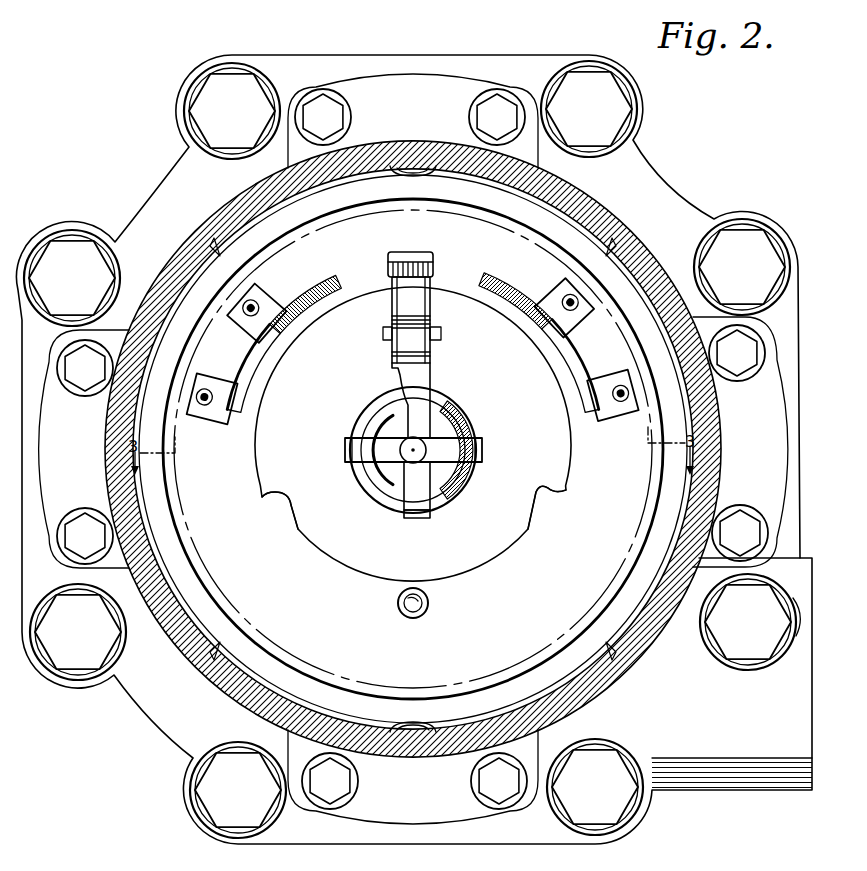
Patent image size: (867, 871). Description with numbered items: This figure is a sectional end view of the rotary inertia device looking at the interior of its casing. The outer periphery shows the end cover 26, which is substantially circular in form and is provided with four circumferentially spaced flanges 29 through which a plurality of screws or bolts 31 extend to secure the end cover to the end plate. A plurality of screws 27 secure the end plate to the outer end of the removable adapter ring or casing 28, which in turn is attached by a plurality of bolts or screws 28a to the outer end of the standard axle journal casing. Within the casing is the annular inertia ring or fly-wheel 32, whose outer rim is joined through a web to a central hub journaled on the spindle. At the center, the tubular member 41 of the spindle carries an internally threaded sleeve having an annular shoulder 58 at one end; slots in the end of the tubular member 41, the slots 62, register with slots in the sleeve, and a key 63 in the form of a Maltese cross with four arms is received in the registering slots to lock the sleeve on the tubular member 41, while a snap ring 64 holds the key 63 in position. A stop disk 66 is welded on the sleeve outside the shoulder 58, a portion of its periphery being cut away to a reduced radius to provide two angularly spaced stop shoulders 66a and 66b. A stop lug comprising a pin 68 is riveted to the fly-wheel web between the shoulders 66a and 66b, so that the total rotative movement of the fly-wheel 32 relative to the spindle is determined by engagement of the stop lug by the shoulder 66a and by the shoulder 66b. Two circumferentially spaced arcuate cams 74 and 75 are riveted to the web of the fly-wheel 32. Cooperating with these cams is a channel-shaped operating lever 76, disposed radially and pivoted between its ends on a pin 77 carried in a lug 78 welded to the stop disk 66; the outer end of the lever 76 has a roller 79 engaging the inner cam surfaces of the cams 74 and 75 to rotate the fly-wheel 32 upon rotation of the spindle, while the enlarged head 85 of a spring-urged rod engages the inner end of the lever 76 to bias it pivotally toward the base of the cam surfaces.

The end cover 26 is at (630, 652).
The screws 27 is at (407, 168).
The adapter ring or casing 28 is at (115, 215).
The bolts or screws 28a is at (225, 130).
The flanges 29 is at (398, 80).
The screws or bolts 31 is at (490, 118).
The inertia ring or fly-wheel 32 is at (500, 702).
The tubular member of spindle 41 is at (443, 433).
The annular shoulder 58 is at (387, 400).
The slots 62 is at (418, 503).
The key 63 is at (415, 487).
The snap ring 64 is at (472, 463).
The stop disk 66 is at (260, 472).
The stop shoulder 66a is at (274, 497).
The stop shoulder 66b is at (552, 493).
The pin 68 is at (398, 603).
The arcuate cam 74 is at (336, 277).
The arcuate cam 75 is at (498, 265).
The operating lever 76 is at (436, 371).
The pin 77 is at (460, 330).
The lug 78 is at (392, 320).
The roller 79 is at (434, 264).
The head 85 is at (407, 446).